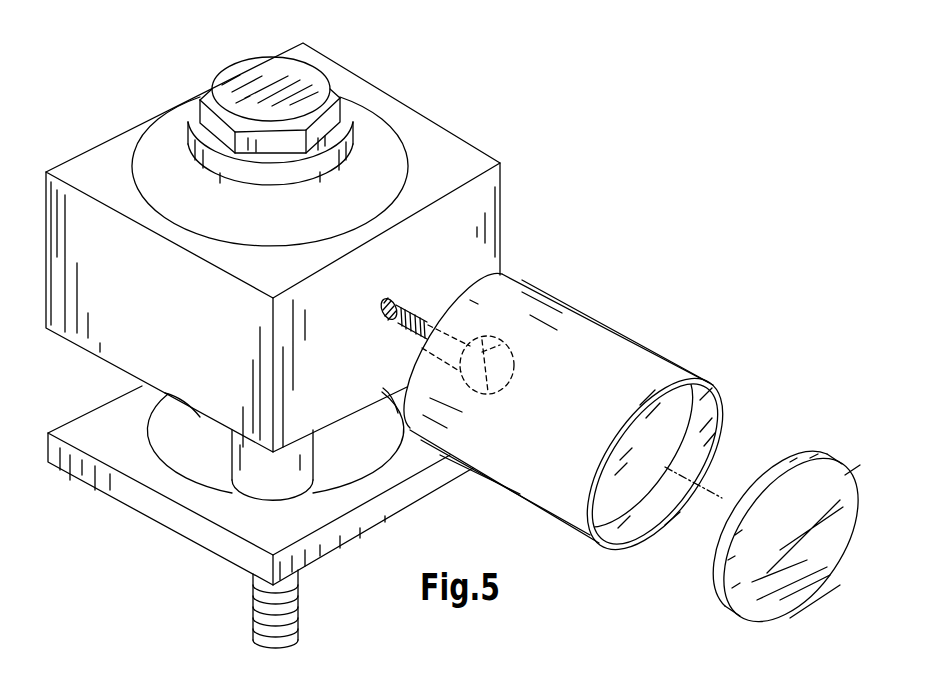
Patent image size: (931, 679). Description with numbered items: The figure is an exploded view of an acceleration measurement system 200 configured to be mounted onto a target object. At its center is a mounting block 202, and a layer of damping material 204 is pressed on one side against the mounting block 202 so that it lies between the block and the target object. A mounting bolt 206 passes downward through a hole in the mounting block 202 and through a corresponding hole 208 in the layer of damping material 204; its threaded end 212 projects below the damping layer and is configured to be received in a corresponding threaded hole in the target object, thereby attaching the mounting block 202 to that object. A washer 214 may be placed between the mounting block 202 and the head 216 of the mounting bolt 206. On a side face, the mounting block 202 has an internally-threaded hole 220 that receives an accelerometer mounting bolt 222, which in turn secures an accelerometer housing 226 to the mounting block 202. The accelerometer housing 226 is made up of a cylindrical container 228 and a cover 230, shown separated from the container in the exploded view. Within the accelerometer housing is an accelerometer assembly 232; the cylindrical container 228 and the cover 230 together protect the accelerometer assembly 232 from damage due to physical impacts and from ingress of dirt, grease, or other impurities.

The acceleration measurement system 200 is at (165, 48).
The mounting block 202 is at (447, 140).
The layer of damping material 204 is at (423, 487).
The mounting bolt 206 is at (357, 81).
The hole 208 is at (200, 461).
The threaded end 212 is at (253, 622).
The washer 214 is at (188, 150).
The head 216 is at (305, 78).
The internally-threaded hole 220 is at (386, 297).
The accelerometer mounting bolt 222 is at (515, 365).
The accelerometer housing 226 is at (587, 294).
The cylindrical container 228 is at (620, 356).
The cover 230 is at (746, 582).
The accelerometer assembly 232 is at (692, 418).